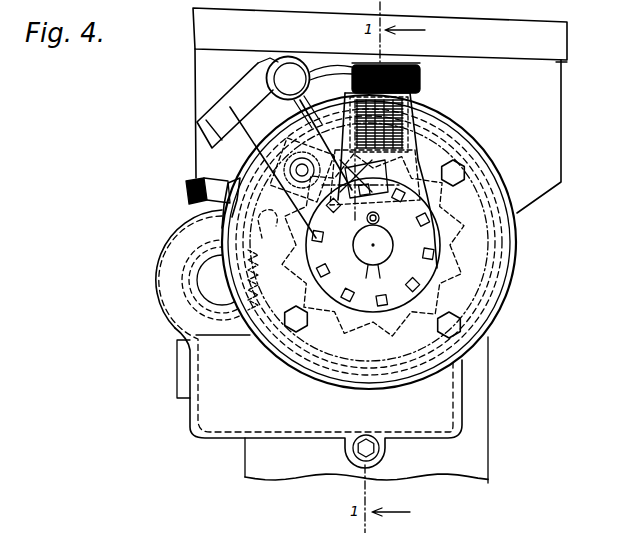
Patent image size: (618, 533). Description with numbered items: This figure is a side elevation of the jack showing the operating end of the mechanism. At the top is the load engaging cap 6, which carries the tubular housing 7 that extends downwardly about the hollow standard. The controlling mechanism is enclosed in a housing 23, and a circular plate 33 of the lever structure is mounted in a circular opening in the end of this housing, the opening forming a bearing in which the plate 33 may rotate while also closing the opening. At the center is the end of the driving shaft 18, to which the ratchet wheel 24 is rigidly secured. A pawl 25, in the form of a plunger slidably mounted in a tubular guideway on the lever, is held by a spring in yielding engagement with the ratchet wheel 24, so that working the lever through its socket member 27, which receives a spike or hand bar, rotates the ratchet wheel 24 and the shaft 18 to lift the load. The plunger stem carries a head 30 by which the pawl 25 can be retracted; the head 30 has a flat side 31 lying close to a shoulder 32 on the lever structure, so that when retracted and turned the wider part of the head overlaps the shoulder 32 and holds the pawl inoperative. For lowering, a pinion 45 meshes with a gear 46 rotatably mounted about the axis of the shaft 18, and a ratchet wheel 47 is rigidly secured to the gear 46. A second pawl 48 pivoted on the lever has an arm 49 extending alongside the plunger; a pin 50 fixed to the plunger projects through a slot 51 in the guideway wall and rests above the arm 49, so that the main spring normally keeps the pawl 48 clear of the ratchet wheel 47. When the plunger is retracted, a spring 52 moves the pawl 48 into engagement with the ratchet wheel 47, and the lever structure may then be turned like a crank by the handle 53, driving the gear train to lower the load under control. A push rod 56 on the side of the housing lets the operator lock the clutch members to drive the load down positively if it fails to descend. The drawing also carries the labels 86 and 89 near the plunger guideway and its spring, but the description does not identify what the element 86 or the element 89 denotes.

The cap 6 is at (566, 16).
The tubular housing 7 is at (548, 128).
The shaft 18 is at (380, 245).
The housing 23 is at (511, 292).
The ratchet wheel 24 is at (444, 273).
The pawl 25 is at (383, 157).
The socket member 27 is at (233, 110).
The head 30 is at (421, 78).
The flat side 31 is at (379, 63).
The shoulder 32 is at (350, 66).
The circular plate 33 is at (498, 250).
The pinion 45 is at (248, 318).
The gear 46 is at (258, 285).
The ratchet wheel 47 is at (362, 323).
The pawl 48 is at (269, 219).
The arm 49 is at (366, 218).
The pin 50 is at (393, 173).
The slot 51 is at (405, 138).
The spring 52 is at (299, 150).
The handle 53 is at (283, 75).
The push rod 56 is at (190, 187).
The spring housing 86 is at (343, 128).
The spring 89 is at (372, 108).